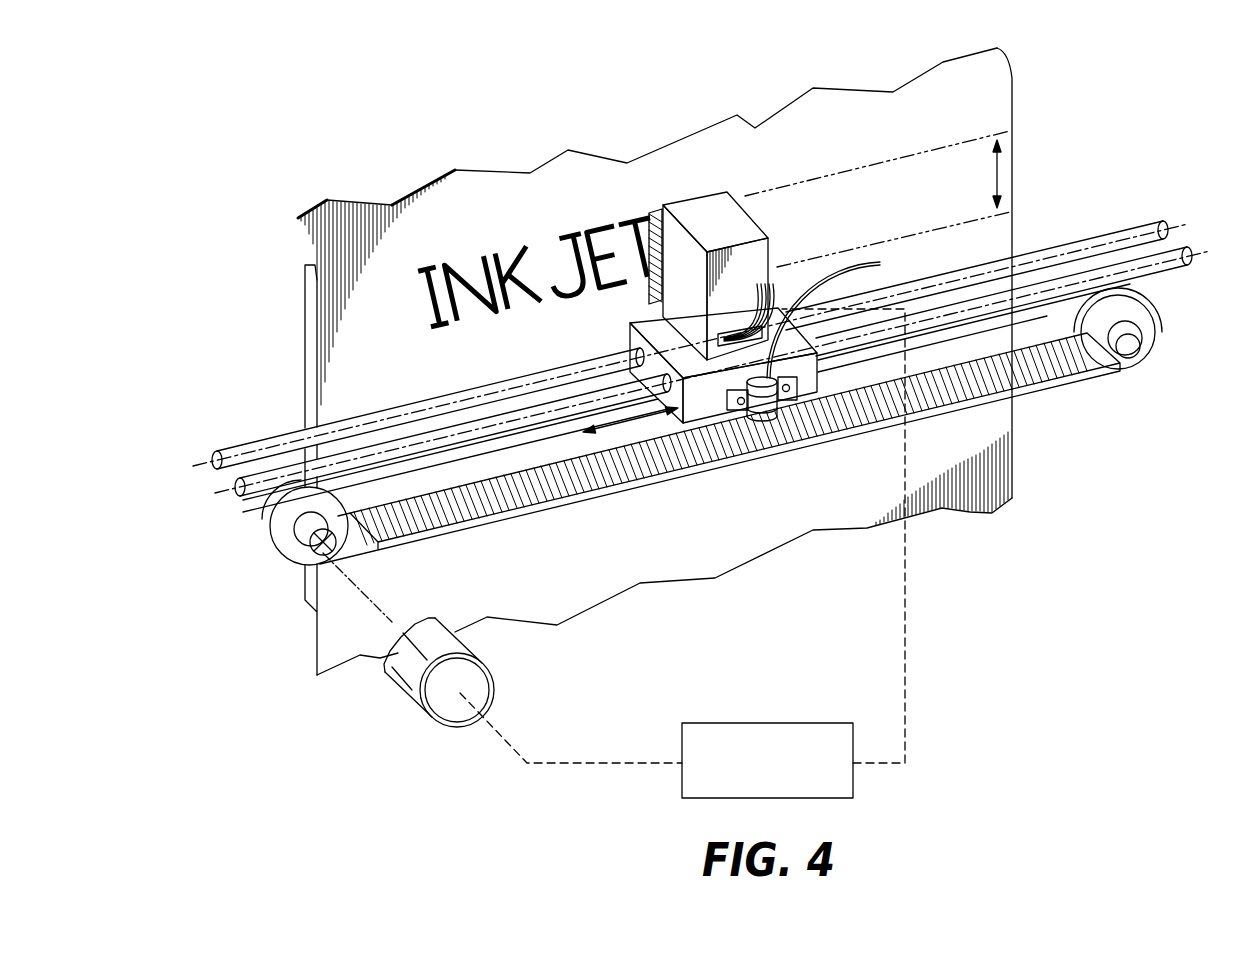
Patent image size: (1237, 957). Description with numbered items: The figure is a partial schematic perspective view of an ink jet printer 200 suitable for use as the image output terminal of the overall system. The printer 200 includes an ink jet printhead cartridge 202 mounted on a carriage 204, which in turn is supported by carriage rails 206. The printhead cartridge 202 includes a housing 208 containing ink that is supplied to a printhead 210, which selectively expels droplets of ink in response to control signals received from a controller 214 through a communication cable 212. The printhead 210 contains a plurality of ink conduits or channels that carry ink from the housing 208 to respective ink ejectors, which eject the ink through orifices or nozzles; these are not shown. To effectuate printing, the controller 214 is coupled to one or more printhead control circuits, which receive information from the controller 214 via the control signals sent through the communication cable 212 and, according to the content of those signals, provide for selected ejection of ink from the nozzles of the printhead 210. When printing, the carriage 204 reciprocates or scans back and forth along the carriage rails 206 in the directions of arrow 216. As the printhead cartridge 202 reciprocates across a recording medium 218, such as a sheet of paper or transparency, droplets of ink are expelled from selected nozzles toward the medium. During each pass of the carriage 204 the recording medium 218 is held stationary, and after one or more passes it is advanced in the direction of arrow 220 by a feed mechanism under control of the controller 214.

The ink jet printer 200 is at (382, 148).
The ink jet printhead cartridge 202 is at (708, 224).
The carriage 204 is at (652, 326).
The carriage rails 206 is at (450, 430).
The housing 208 is at (707, 203).
The printhead 210 is at (659, 217).
The communication cable 212 is at (777, 300).
The controller 214 is at (769, 722).
The arrow 216 is at (655, 425).
The recording medium 218 is at (487, 185).
The arrow 220 is at (997, 170).